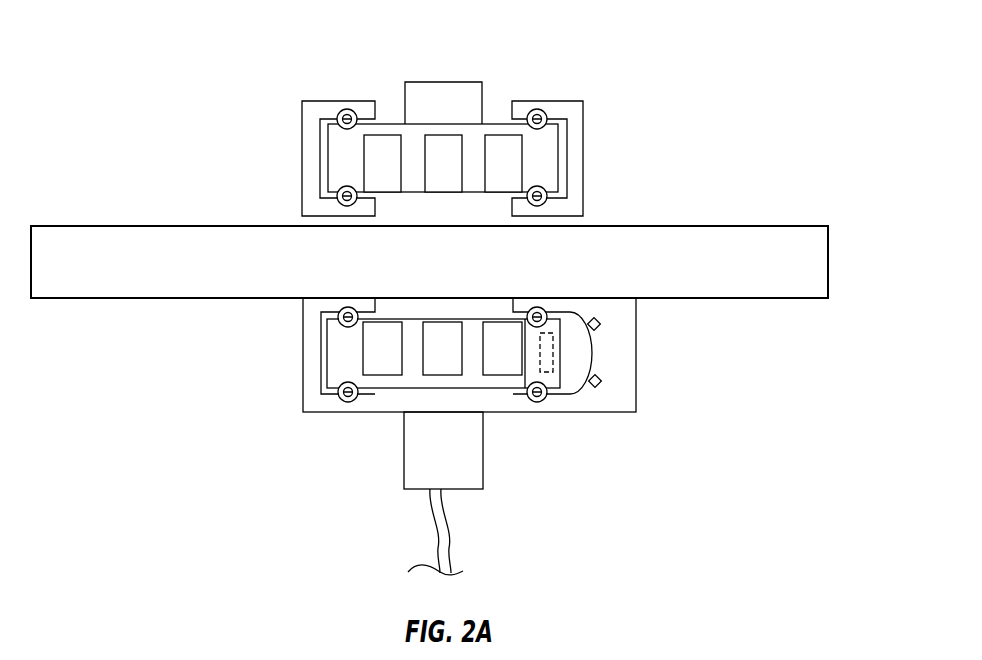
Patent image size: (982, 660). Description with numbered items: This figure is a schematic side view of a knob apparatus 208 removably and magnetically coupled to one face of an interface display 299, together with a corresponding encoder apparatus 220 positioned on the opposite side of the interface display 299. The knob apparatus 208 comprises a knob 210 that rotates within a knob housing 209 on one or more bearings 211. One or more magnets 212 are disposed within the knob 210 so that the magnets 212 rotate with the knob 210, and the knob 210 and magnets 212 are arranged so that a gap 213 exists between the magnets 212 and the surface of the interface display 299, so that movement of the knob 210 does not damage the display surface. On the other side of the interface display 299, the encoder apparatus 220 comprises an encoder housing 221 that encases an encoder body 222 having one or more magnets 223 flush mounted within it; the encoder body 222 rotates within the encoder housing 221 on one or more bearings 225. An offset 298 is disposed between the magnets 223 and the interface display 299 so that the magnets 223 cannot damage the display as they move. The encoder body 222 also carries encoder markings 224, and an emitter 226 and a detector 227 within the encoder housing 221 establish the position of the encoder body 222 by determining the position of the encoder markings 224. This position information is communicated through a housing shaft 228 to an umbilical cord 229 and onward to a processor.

The knob apparatus 208 is at (509, 143).
The knob housing 209 is at (583, 150).
The knob 210 is at (400, 88).
The bearings 211 is at (341, 113).
The magnets 212 is at (382, 135).
The gap 213 is at (443, 202).
The interface display 299 is at (828, 262).
The encoder apparatus 220 is at (466, 407).
The encoder housing 221 is at (303, 348).
The encoder body 222 is at (342, 373).
The magnets 223 is at (383, 375).
The encoder markings 224 is at (562, 353).
The bearings 225 is at (340, 317).
The emitter 226 is at (600, 323).
The detector 227 is at (602, 382).
The housing shaft 228 is at (443, 450).
The umbilical cord 229 is at (448, 535).
The offset 298 is at (467, 310).